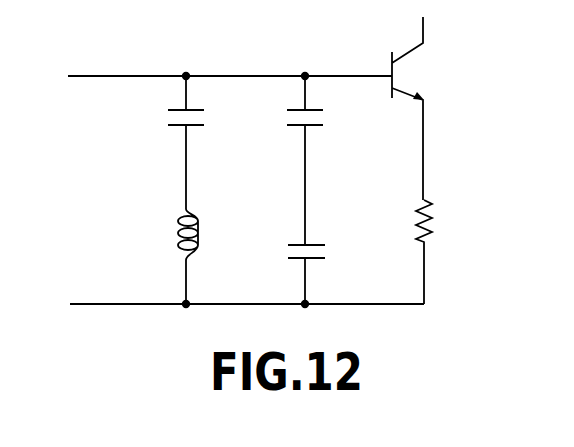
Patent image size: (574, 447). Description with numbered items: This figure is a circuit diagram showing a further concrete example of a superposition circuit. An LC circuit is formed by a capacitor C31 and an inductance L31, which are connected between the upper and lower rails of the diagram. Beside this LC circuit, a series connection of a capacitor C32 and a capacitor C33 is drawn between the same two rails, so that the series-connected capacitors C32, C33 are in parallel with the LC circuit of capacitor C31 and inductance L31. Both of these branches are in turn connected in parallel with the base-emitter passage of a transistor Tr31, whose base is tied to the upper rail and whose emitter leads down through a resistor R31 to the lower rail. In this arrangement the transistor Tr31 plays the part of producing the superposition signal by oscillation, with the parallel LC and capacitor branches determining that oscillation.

The capacitor C31 is at (166, 141).
The capacitor C32 is at (285, 160).
The capacitor C33 is at (284, 274).
The inductance L31 is at (165, 255).
The transistor Tr31 is at (423, 108).
The resistor R31 is at (447, 252).